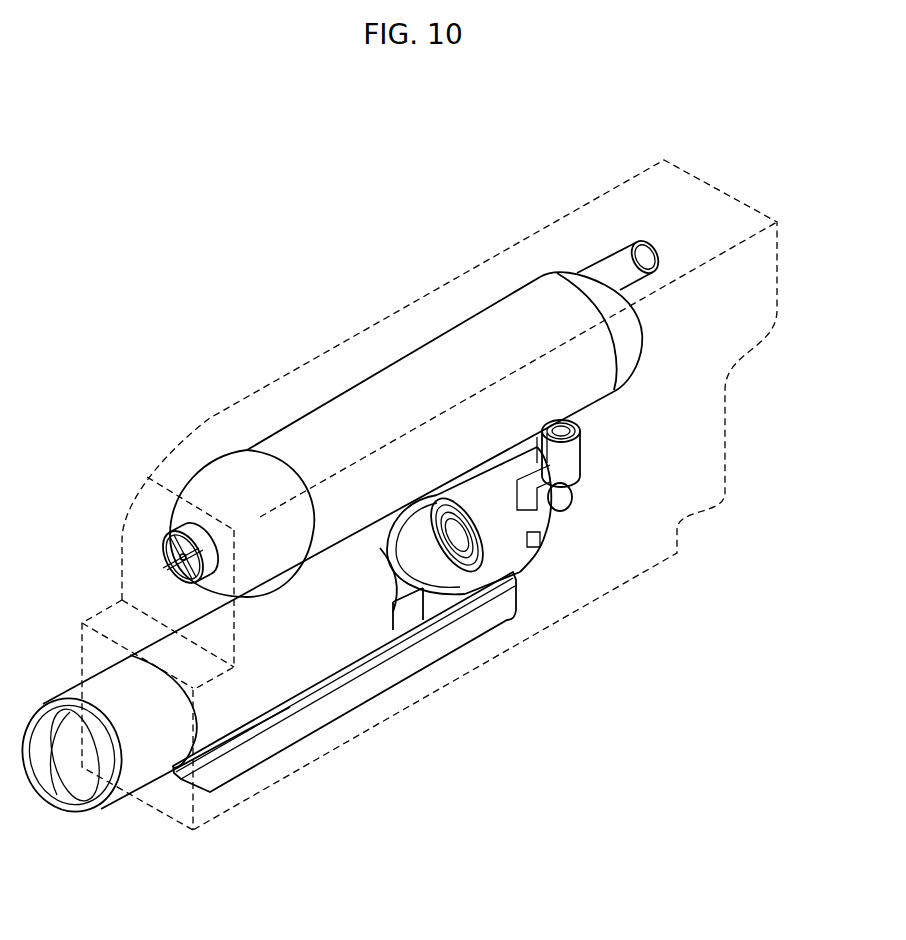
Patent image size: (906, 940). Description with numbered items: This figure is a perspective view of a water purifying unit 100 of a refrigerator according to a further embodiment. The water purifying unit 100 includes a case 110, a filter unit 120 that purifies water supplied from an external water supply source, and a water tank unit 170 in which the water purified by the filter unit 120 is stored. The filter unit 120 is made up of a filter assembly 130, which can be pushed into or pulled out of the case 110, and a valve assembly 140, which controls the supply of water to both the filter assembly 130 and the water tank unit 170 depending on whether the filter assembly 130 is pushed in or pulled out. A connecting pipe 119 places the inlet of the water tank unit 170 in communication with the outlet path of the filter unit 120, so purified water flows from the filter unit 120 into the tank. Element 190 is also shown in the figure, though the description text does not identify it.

The water purifying unit 100 is at (410, 151).
The case 110 is at (589, 200).
The connecting pipe 119 is at (578, 421).
The filter unit 120 is at (623, 650).
The filter assembly 130 is at (377, 628).
The valve assembly 140 is at (517, 550).
The water tank unit 170 is at (360, 400).
The guide plate 190 is at (307, 722).